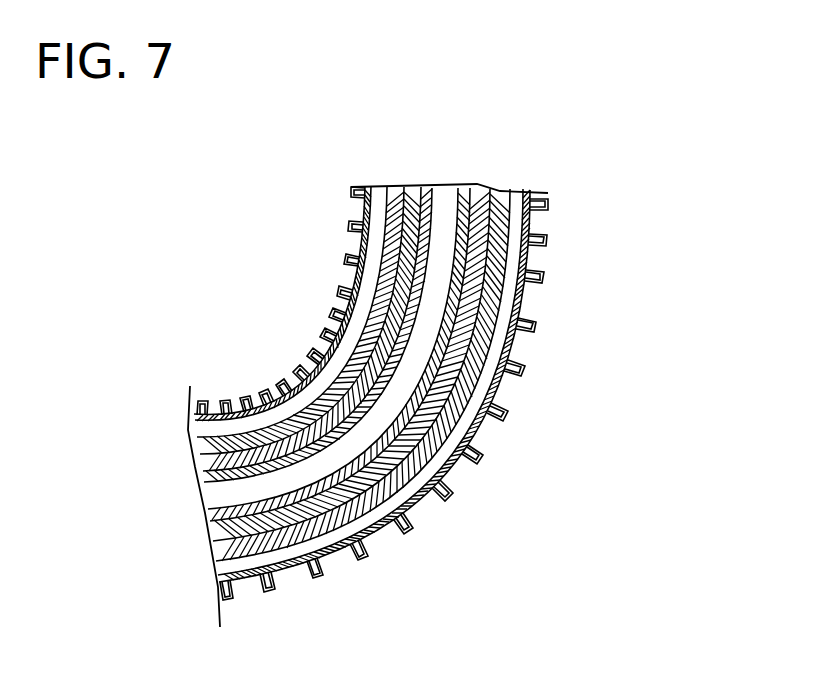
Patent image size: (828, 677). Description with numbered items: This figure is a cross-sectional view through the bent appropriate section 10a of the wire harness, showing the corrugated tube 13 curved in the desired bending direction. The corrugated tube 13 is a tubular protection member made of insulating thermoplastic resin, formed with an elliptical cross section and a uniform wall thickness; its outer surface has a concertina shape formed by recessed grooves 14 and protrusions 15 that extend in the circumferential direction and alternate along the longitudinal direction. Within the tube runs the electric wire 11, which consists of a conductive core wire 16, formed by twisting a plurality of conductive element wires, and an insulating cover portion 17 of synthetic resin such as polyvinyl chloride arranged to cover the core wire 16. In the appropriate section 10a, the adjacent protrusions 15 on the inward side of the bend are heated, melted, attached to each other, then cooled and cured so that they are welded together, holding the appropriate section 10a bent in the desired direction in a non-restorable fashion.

The appropriate section 10a is at (410, 530).
The electric wire 11 is at (296, 564).
The corrugated tube 13 is at (563, 283).
The recessed groove 14 is at (515, 303).
The protrusion 15 is at (318, 340).
The core wire 16 is at (338, 522).
The cover portion 17 is at (365, 520).